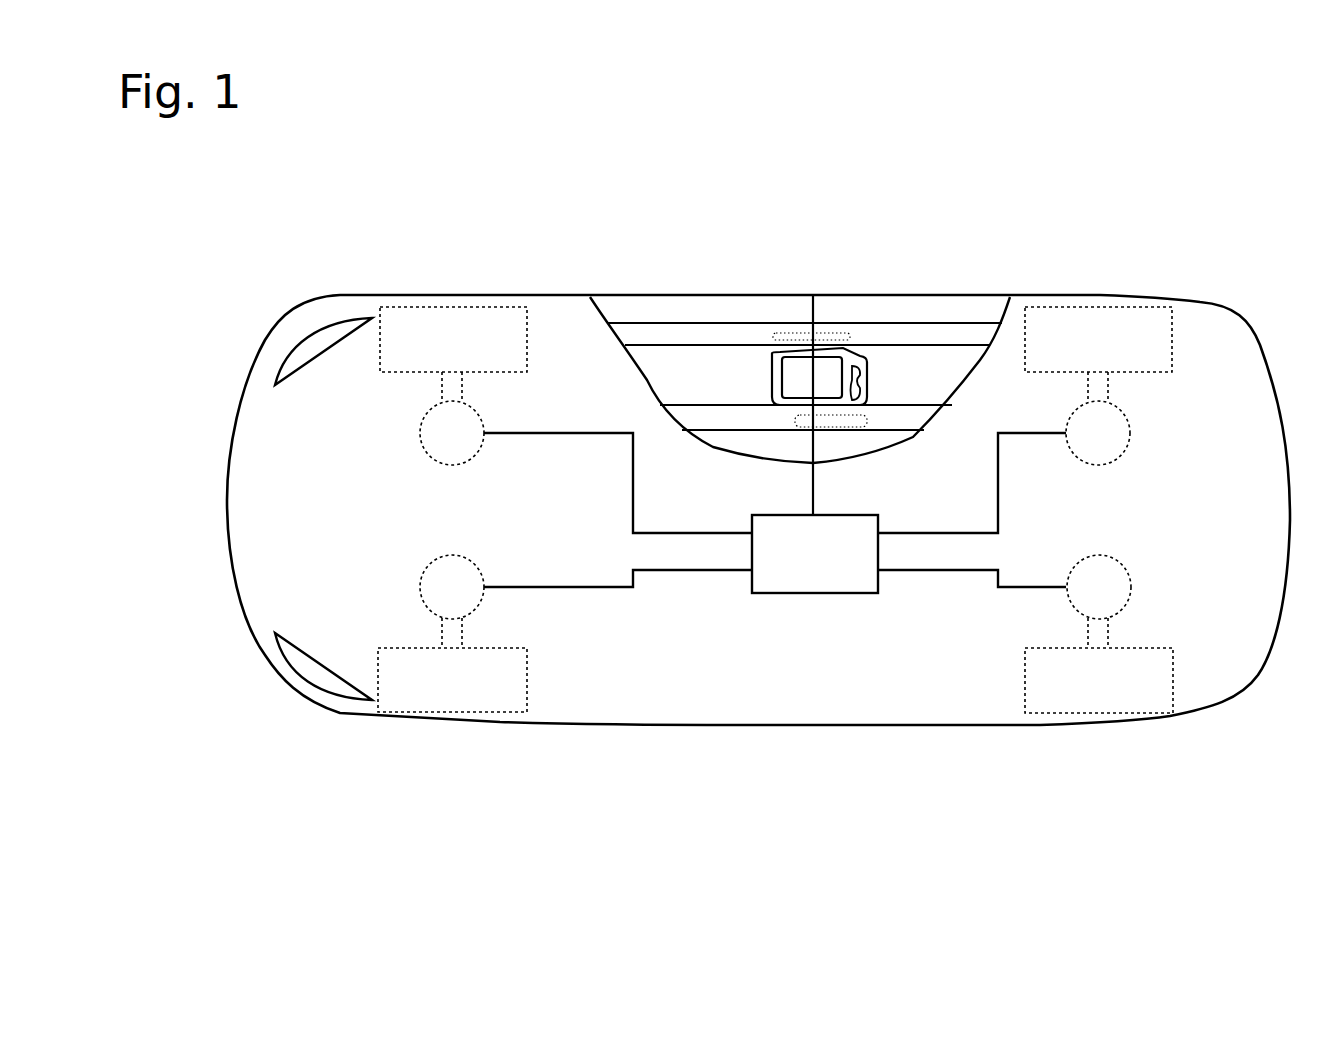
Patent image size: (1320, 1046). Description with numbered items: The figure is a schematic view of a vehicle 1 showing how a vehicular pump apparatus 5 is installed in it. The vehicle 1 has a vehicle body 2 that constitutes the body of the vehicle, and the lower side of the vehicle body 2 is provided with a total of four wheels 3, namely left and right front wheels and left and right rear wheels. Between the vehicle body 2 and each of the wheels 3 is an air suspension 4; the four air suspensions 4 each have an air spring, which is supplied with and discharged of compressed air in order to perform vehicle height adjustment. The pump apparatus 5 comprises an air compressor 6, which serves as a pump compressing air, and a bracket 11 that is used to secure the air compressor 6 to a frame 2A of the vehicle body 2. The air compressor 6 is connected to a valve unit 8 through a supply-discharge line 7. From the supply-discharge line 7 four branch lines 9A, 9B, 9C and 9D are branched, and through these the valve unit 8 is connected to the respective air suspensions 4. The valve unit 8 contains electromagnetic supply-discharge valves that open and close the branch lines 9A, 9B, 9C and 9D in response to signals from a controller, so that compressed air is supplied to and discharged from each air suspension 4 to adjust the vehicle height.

The vehicle 1 is at (876, 732).
The vehicle body 2 is at (738, 727).
The frame 2A is at (690, 415).
The wheels 3 is at (453, 332).
The air suspensions 4 is at (450, 441).
The pump apparatus 5 is at (824, 340).
The air compressor 6 is at (805, 380).
The supply-discharge line 7 is at (815, 487).
The valve unit 8 is at (813, 595).
The branch line 9A is at (548, 585).
The branch line 9B is at (545, 437).
The branch line 9C is at (1038, 585).
The branch line 9D is at (1030, 437).
The bracket 11 is at (860, 372).